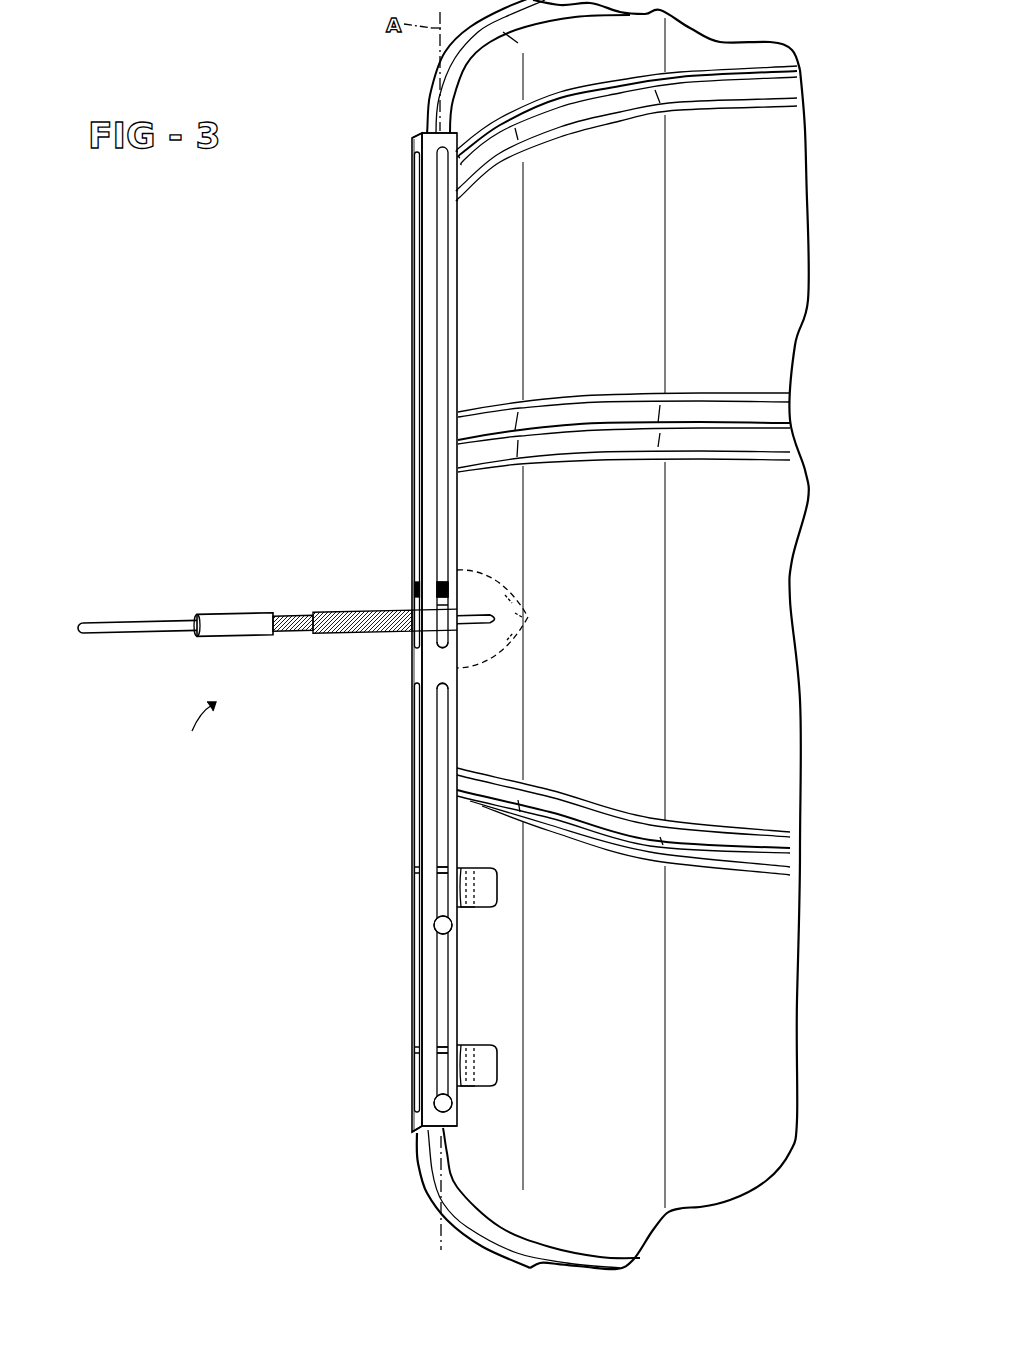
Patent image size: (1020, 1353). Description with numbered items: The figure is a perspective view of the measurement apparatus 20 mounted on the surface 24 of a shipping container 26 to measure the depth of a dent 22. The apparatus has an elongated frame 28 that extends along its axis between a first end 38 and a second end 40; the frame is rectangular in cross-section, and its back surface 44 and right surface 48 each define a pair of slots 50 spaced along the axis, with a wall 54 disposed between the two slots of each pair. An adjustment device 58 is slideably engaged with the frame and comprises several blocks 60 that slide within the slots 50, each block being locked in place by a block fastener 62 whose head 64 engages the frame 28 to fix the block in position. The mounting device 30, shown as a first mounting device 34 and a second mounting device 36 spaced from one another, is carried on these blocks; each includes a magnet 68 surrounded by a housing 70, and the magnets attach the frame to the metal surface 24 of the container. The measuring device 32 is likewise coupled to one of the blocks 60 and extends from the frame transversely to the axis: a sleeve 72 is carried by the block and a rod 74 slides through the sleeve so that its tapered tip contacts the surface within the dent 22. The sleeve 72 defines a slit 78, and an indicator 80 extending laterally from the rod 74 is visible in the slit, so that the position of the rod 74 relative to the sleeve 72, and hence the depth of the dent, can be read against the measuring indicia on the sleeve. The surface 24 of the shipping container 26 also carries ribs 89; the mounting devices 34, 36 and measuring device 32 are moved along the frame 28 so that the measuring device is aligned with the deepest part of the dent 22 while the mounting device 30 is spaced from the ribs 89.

The measurement apparatus 20 is at (196, 730).
The dent 22 is at (507, 628).
The surface 24 is at (473, 517).
The shipping container 26 is at (770, 187).
The frame 28 is at (412, 150).
The mounting device 30 is at (487, 887).
The measuring device 32 is at (207, 613).
The first mounting device 34 is at (470, 1087).
The second mounting device 36 is at (470, 908).
The first end 38 is at (415, 135).
The second end 40 is at (417, 1131).
The back surface 44 is at (415, 679).
The right surface 48 is at (440, 687).
The slot 50 is at (438, 300).
The wall 54 is at (437, 667).
The adjustment device 58 is at (440, 605).
The block 60 is at (440, 605).
The block fastener 62 is at (434, 926).
The head 64 is at (452, 930).
The magnet 68 is at (497, 877).
The housing 70 is at (462, 868).
The sleeve 72 is at (223, 617).
The rod 74 is at (107, 629).
The slit 78 is at (280, 615).
The indicator 80 is at (313, 612).
The ribs 89 is at (790, 90).